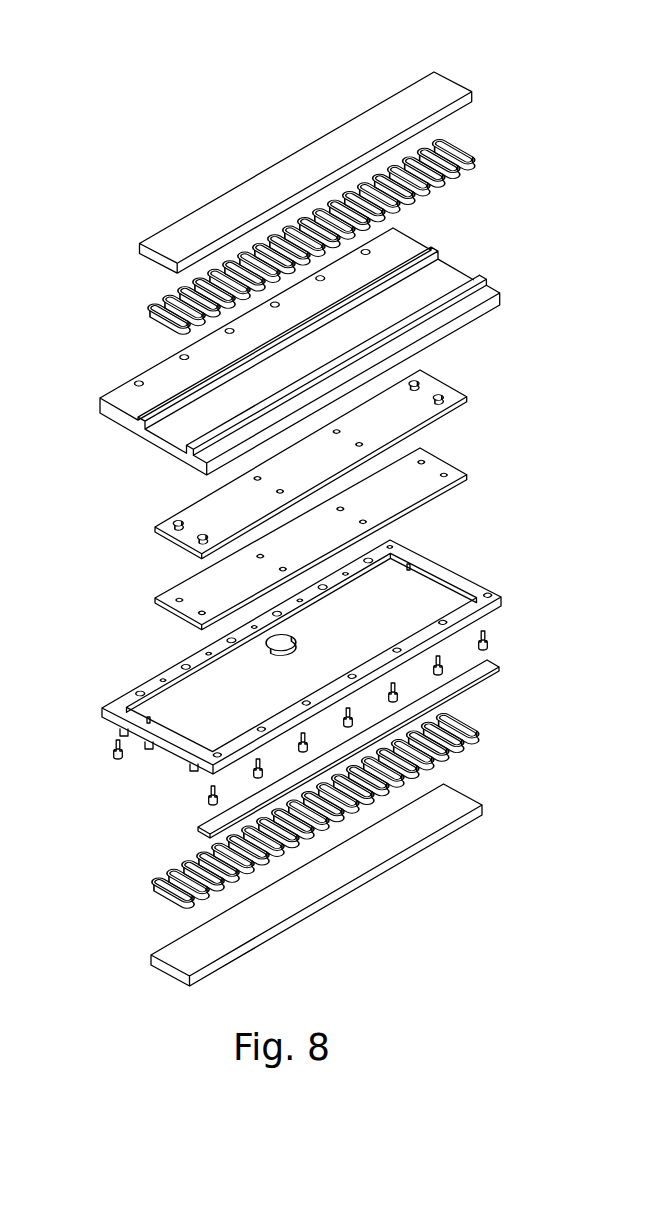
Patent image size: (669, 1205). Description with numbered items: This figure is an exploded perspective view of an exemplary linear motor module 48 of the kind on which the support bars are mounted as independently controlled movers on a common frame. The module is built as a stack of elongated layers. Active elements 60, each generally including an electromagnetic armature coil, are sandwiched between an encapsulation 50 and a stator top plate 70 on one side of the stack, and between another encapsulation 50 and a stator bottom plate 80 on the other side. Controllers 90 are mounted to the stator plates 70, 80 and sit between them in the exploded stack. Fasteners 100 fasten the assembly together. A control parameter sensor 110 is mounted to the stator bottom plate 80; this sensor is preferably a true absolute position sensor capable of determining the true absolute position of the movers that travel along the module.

The linear motor module 48 is at (133, 138).
The encapsulation 50 is at (450, 80).
The active elements 60 is at (455, 150).
The stator top plate 70 is at (452, 262).
The stator bottom plate 80 is at (450, 570).
The controllers 90 is at (447, 385).
The fasteners 100 is at (488, 630).
The control parameter sensor 110 is at (477, 680).